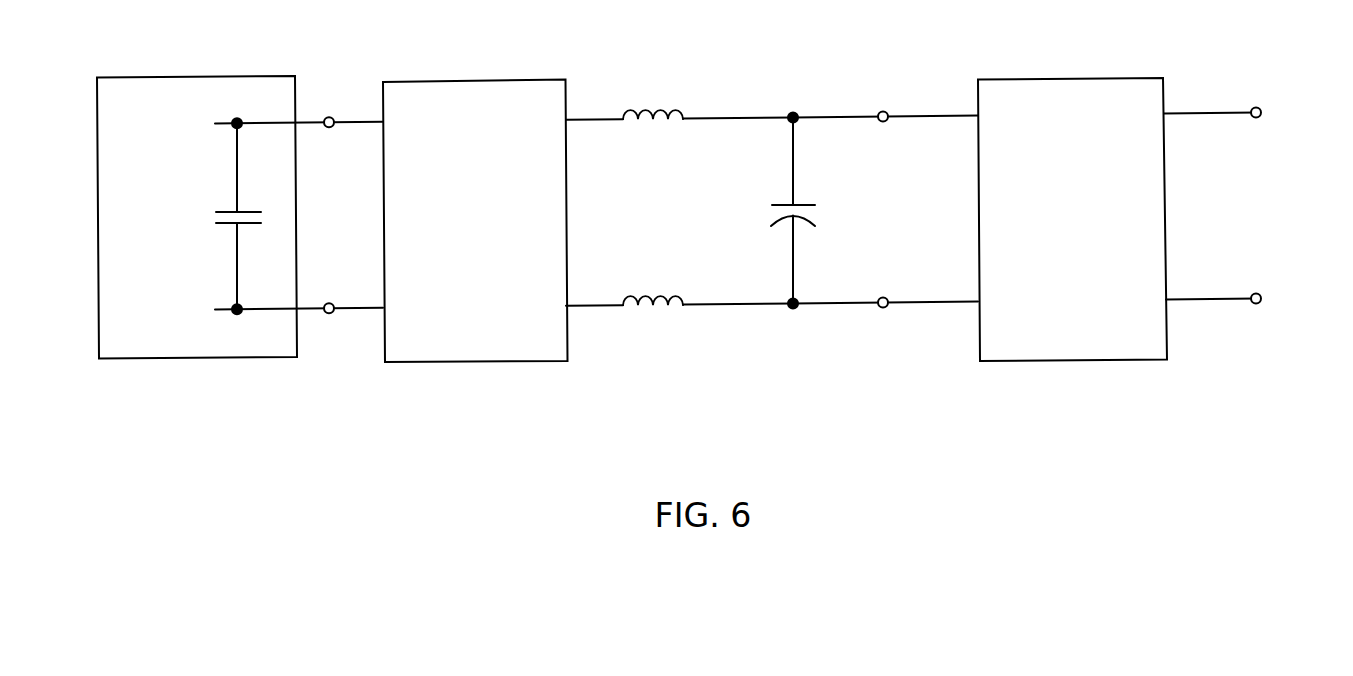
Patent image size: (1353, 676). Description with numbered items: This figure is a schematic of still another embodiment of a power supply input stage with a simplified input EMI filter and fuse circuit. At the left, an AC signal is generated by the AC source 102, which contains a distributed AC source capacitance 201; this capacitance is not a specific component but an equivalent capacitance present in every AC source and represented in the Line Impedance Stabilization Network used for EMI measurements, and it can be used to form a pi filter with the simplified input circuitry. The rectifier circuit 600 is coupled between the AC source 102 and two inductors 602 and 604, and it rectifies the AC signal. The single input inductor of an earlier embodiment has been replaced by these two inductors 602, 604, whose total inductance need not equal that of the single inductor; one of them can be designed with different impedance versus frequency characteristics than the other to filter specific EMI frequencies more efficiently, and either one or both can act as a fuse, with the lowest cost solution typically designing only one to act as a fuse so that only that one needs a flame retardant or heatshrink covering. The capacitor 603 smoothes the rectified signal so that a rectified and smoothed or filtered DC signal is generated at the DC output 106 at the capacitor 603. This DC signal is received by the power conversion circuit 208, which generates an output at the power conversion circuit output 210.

The AC source 102 is at (141, 242).
The AC source capacitance 201 is at (254, 216).
The rectifier circuit 600 is at (457, 258).
The inductor 602 is at (653, 102).
The inductor 604 is at (653, 289).
The capacitor 603 is at (785, 210).
The DC output 106 is at (885, 209).
The power conversion circuit 208 is at (1055, 268).
The power conversion circuit output 210 is at (1242, 206).